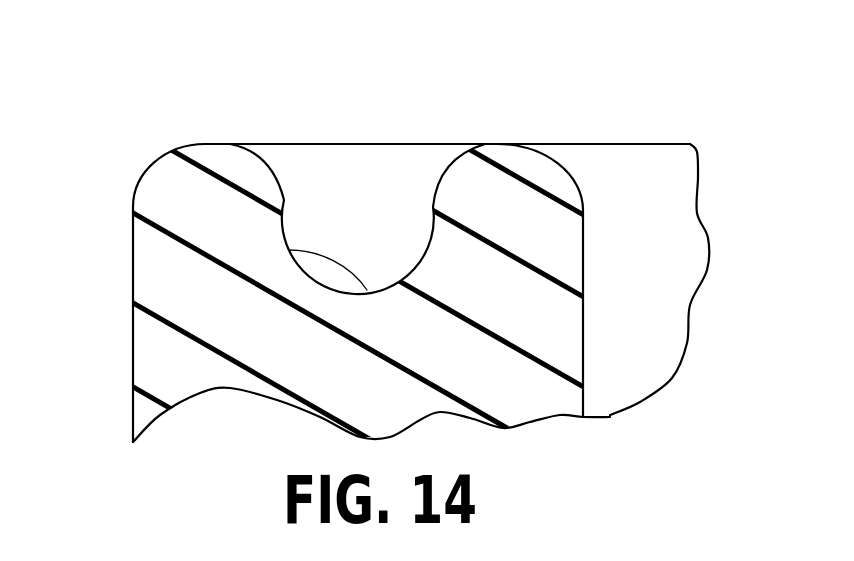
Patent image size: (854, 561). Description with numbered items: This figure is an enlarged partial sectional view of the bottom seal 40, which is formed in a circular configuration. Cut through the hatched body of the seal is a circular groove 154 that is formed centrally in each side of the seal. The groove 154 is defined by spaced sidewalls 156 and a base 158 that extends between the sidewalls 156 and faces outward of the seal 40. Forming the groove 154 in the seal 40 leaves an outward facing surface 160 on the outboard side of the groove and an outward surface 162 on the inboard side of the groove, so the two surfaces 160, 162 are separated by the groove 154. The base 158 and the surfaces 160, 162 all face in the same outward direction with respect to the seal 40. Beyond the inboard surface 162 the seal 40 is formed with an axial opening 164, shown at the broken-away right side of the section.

The bottom seal 40 is at (138, 183).
The circular groove 154 is at (443, 170).
The sidewalls 156 is at (427, 222).
The base 158 is at (289, 250).
The outward facing surface 160 is at (207, 143).
The outward surface 162 is at (505, 143).
The axial opening 164 is at (618, 227).